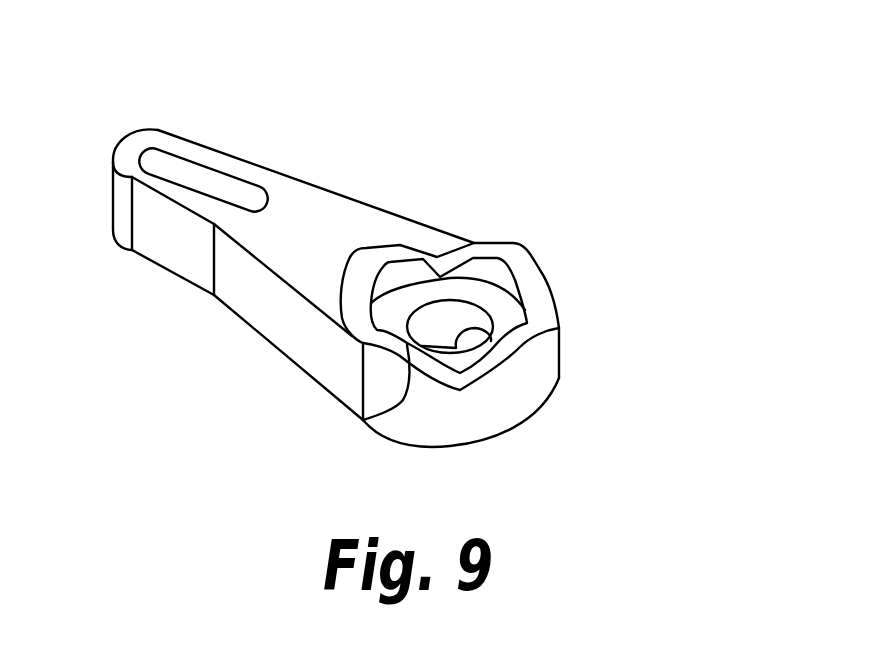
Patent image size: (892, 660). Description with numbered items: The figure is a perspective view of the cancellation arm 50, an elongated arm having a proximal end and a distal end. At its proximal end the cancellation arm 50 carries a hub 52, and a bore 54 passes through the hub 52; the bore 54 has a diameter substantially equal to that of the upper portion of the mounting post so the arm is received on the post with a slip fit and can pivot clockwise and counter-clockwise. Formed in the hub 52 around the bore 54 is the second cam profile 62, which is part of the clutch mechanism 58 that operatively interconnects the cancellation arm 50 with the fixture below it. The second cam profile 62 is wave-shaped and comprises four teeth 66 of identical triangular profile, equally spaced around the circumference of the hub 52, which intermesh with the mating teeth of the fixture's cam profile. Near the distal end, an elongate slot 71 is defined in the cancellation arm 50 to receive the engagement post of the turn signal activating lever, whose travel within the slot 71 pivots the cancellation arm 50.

The cancellation arm 50 is at (339, 147).
The elongate slot 71 is at (207, 163).
The clutch mechanism 58 is at (572, 292).
The second cam profile 62 is at (574, 179).
The teeth 66 is at (380, 252).
The hub 52 is at (560, 357).
The bore 54 is at (492, 338).